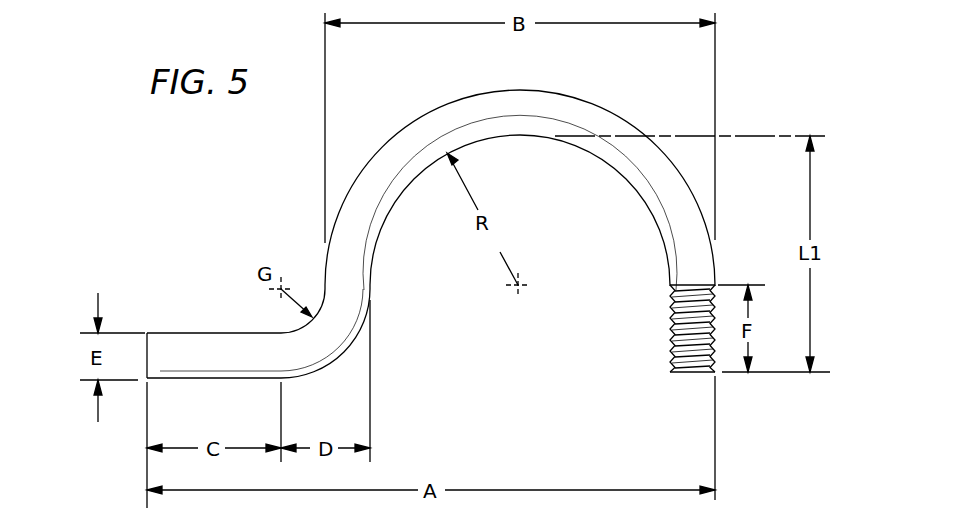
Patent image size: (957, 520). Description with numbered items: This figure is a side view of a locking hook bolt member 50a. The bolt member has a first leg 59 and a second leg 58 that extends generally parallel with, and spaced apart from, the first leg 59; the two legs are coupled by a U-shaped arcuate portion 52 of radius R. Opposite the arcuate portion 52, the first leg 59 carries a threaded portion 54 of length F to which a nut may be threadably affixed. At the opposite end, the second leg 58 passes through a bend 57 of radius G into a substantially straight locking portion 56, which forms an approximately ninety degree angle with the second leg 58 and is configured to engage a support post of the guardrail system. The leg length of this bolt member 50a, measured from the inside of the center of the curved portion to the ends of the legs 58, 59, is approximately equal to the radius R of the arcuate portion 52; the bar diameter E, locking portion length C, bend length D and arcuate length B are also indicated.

The bolt member 50a is at (268, 183).
The arcuate portion 52 is at (554, 93).
The threaded portion 54 is at (671, 356).
The locking portion 56 is at (186, 332).
The bend 57 is at (344, 357).
The second leg 58 is at (372, 255).
The first leg 59 is at (663, 243).